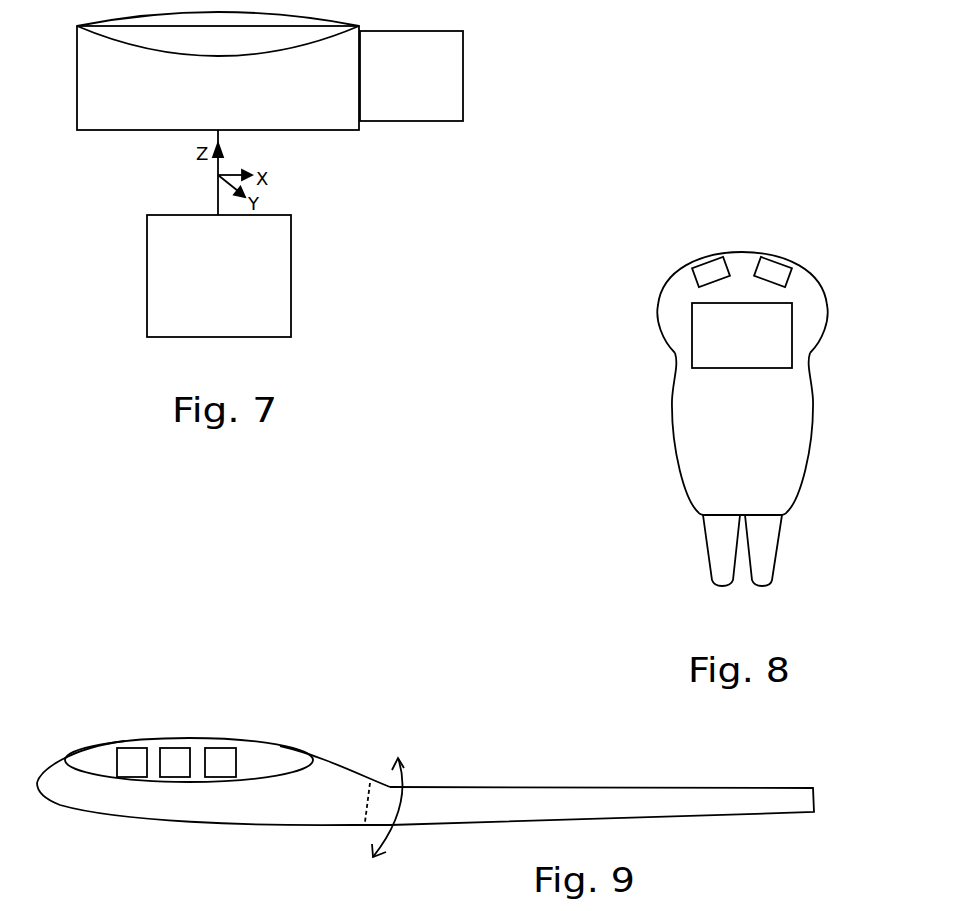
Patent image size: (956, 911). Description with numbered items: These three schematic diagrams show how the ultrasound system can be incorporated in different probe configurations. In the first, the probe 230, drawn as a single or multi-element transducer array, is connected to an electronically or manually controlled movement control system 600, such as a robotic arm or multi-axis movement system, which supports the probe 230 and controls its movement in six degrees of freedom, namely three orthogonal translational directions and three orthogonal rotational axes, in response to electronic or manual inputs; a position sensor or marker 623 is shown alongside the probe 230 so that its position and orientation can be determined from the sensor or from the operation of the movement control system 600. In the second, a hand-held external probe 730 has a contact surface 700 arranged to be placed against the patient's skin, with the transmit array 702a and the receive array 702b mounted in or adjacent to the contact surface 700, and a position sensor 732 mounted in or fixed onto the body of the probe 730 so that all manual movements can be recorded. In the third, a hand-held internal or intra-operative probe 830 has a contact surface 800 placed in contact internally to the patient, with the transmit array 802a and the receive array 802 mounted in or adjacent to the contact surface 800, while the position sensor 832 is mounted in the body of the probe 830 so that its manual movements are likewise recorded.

In FIG. 7, the probe 230 is at (93, 130).
In FIG. 7, the position sensor/marker 623 is at (442, 121).
In FIG. 7, the movement control system 600 is at (147, 278).
In FIG. 8, the contact surface 700 is at (678, 272).
In FIG. 8, the transmit array 702a is at (706, 262).
In FIG. 8, the receive array 702b is at (778, 262).
In FIG. 8, the hand-held external probe 730 is at (672, 415).
In FIG. 8, the position sensor 732 is at (805, 329).
In FIG. 9, the contact surface 800 is at (278, 747).
In FIG. 9, the receive (RX) transducer element 802 is at (225, 747).
In FIG. 9, the transmit array 802a is at (172, 747).
In FIG. 9, the hand-held internal or intra-operative probe 830 is at (345, 770).
In FIG. 9, the position sensor 832 is at (128, 742).